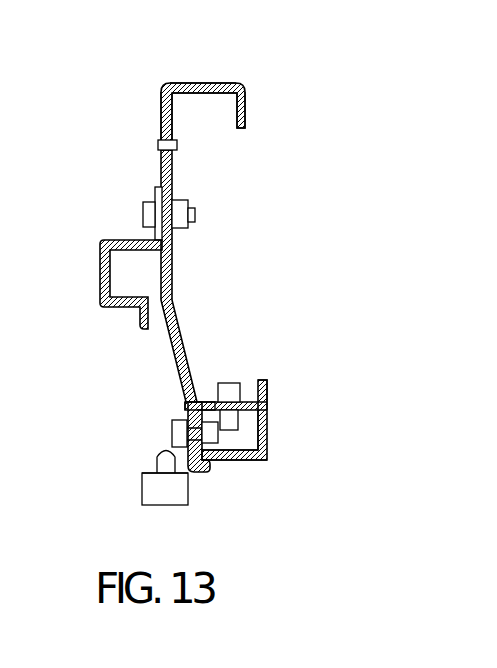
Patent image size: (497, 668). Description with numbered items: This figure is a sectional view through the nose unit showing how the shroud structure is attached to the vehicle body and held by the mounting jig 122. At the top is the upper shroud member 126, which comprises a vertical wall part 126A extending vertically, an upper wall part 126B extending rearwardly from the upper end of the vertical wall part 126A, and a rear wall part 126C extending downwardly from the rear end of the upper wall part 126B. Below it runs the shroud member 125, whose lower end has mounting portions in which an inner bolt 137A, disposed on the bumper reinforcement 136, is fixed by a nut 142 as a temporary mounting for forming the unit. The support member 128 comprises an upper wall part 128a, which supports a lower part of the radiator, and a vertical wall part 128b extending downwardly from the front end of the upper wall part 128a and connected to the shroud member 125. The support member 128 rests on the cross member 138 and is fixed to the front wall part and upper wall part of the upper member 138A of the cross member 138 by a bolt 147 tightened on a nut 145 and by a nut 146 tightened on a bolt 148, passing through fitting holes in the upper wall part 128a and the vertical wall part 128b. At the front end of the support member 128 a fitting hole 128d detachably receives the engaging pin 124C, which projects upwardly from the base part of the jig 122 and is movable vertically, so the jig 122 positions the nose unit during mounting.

The jig 122 is at (183, 488).
The engaging pin 124C is at (156, 462).
The shroud member 125 is at (176, 272).
The upper shroud member 126 is at (245, 86).
The vertical wall part 126A is at (160, 108).
The upper wall part 126B is at (199, 83).
The rear wall part 126C is at (246, 106).
The support member 128 is at (197, 392).
The upper wall part 128a is at (201, 392).
The vertical wall part 128b is at (186, 404).
The fitting hole 128d is at (158, 503).
The bumper reinforcement 136 is at (100, 275).
The inner bolt 137A is at (143, 211).
The cross member 138 is at (268, 446).
The upper member 138A is at (263, 380).
The nut 142 is at (182, 205).
The nut 145 is at (268, 422).
The nut 146 is at (243, 460).
The bolt 147 is at (230, 382).
The bolt 148 is at (172, 432).